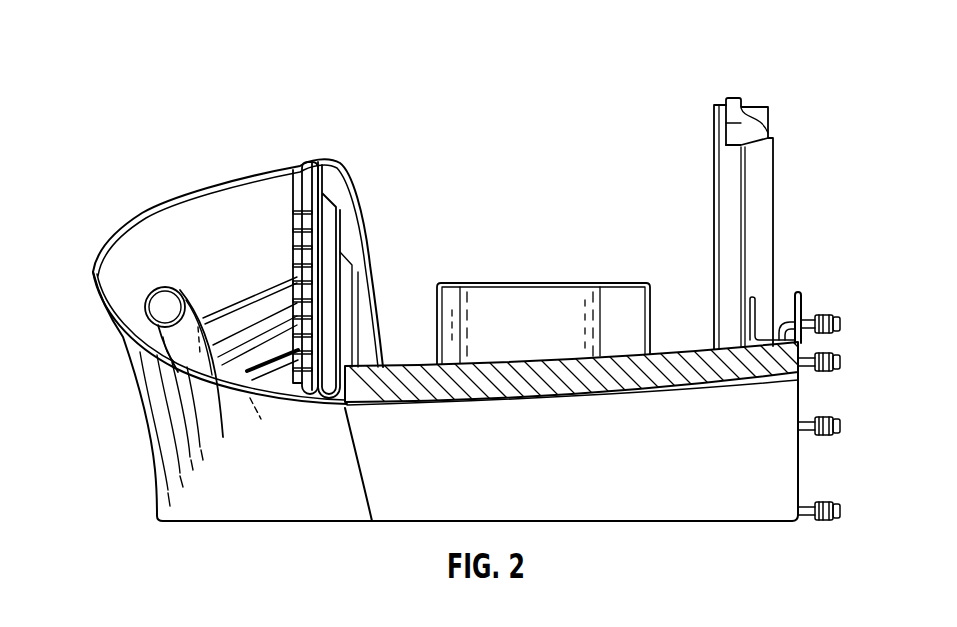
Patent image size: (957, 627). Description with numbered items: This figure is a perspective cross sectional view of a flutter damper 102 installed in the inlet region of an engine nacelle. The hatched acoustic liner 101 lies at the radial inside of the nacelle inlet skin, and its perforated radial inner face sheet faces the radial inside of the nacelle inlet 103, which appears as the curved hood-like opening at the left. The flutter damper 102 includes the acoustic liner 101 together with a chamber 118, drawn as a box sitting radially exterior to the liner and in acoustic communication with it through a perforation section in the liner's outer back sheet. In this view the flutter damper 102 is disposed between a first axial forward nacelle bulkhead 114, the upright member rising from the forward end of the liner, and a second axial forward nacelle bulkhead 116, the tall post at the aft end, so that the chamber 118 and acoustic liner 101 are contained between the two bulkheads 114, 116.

The acoustic liner 101 is at (393, 384).
The flutter damper 102 is at (552, 136).
The nacelle inlet 103 is at (114, 155).
The first axial forward nacelle bulkhead 114 is at (312, 160).
The second axial forward nacelle bulkhead 116 is at (755, 107).
The chamber 118 is at (583, 268).